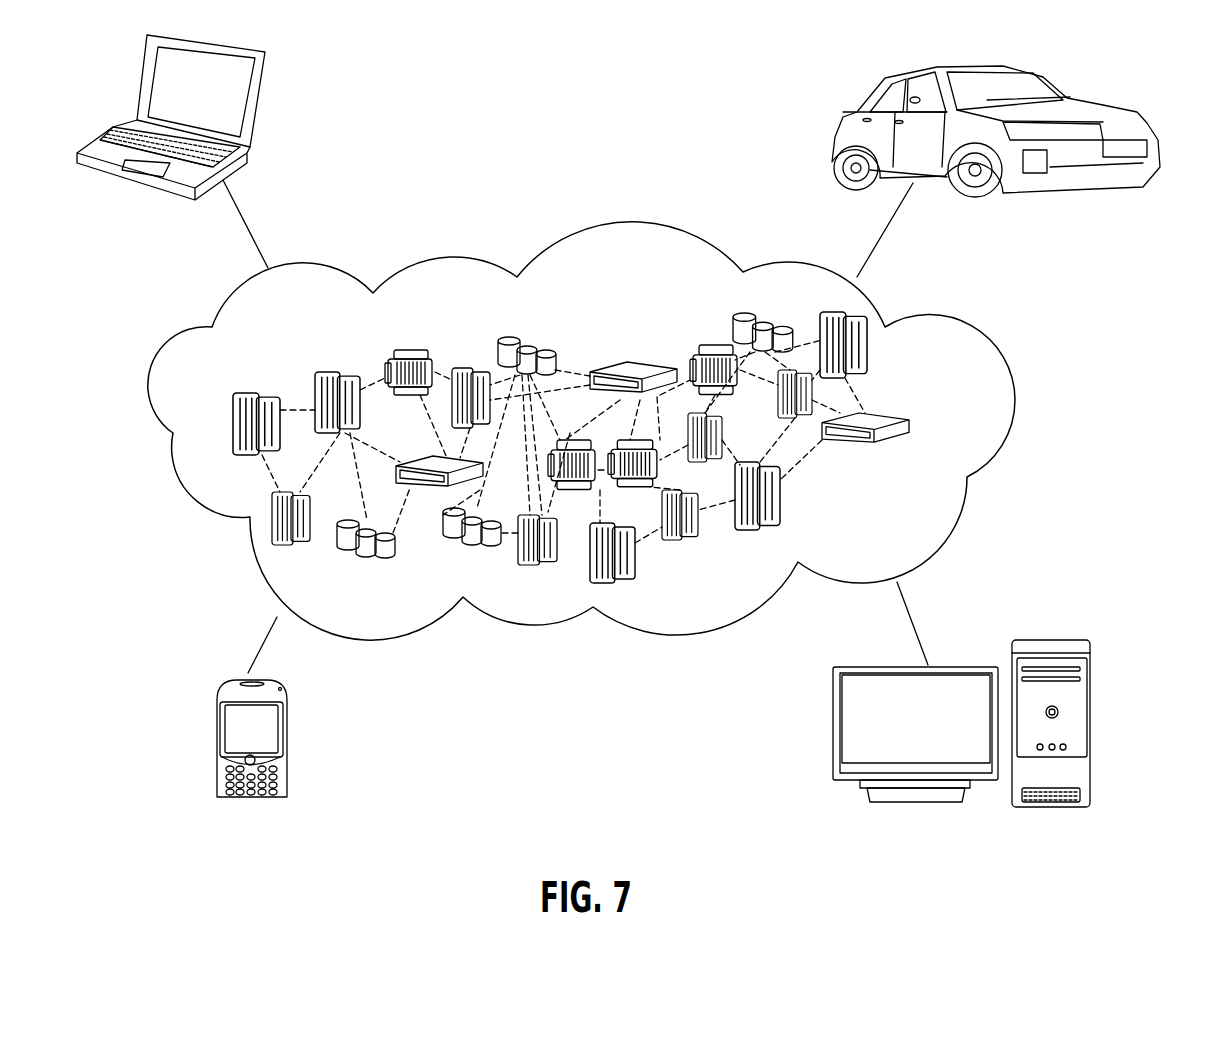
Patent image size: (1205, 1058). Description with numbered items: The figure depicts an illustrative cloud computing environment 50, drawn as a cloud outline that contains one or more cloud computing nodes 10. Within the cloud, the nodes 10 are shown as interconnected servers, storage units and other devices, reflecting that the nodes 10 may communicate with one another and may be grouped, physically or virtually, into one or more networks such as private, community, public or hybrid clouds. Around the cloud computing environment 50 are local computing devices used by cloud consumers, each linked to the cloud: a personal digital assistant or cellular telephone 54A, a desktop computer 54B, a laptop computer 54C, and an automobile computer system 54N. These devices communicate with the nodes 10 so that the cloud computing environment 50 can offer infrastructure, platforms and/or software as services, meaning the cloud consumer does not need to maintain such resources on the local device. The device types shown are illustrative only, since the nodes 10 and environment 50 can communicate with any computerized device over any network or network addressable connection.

The cloud computing environment 50 is at (972, 340).
The cloud computing node 10 is at (952, 428).
The personal digital assistant or cellular telephone 54A is at (217, 743).
The desktop computer 54B is at (1053, 640).
The laptop computer 54C is at (257, 110).
The automobile computer system 54N is at (845, 120).